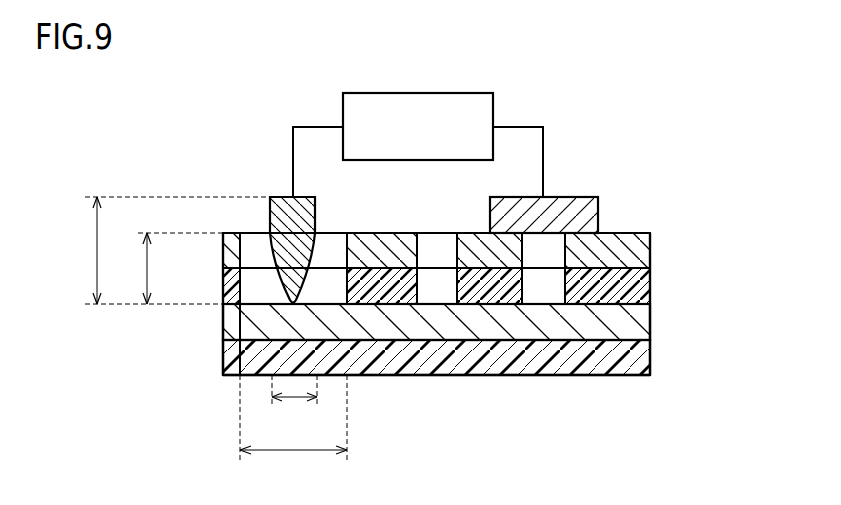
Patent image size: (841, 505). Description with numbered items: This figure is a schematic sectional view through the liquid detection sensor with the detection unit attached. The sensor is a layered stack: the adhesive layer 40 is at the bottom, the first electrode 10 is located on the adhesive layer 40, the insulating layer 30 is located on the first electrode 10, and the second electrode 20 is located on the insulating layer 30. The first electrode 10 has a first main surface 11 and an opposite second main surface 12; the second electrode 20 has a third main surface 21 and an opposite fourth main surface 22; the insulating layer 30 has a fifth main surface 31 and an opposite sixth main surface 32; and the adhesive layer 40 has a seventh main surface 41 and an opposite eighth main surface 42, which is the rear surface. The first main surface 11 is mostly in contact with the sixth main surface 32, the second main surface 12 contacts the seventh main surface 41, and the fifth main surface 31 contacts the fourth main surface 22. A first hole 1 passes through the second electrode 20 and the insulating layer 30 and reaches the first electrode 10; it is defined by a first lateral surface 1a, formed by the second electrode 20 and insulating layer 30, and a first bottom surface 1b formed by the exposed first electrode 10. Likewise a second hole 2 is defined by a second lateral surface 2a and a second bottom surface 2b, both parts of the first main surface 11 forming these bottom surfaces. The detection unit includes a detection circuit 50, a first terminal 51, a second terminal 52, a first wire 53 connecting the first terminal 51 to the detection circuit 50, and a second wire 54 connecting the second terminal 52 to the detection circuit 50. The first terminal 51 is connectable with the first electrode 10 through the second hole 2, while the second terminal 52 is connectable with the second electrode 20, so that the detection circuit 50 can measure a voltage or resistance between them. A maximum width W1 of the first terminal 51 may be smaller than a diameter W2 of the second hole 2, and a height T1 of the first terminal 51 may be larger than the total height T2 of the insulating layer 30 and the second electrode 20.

The first hole 1 is at (466, 347).
The first lateral surface 1a is at (426, 325).
The first bottom surface 1b is at (444, 330).
The second hole 2 is at (371, 348).
The second lateral surface 2a is at (228, 312).
The second bottom surface 2b is at (232, 350).
The first electrode 10 is at (229, 310).
The first main surface 11 is at (637, 301).
The second main surface 12 is at (625, 360).
The second electrode 20 is at (233, 255).
The third main surface 21 is at (640, 233).
The fourth main surface 22 is at (625, 282).
The insulating layer 30 is at (237, 290).
The fifth main surface 31 is at (620, 271).
The sixth main surface 32 is at (620, 306).
The adhesive layer 40 is at (236, 375).
The seventh main surface 41 is at (633, 338).
The eighth main surface 42 is at (637, 375).
The detection circuit 50 is at (419, 93).
The first terminal 51 is at (288, 252).
The second terminal 52 is at (575, 197).
The first wire 53 is at (316, 127).
The second wire 54 is at (520, 127).
The height of first terminal T1 is at (166, 250).
The total height of insulating layer and second electrode T2 is at (166, 268).
The maximum width of first terminal W1 is at (294, 401).
The diameter of second hole W2 is at (293, 427).